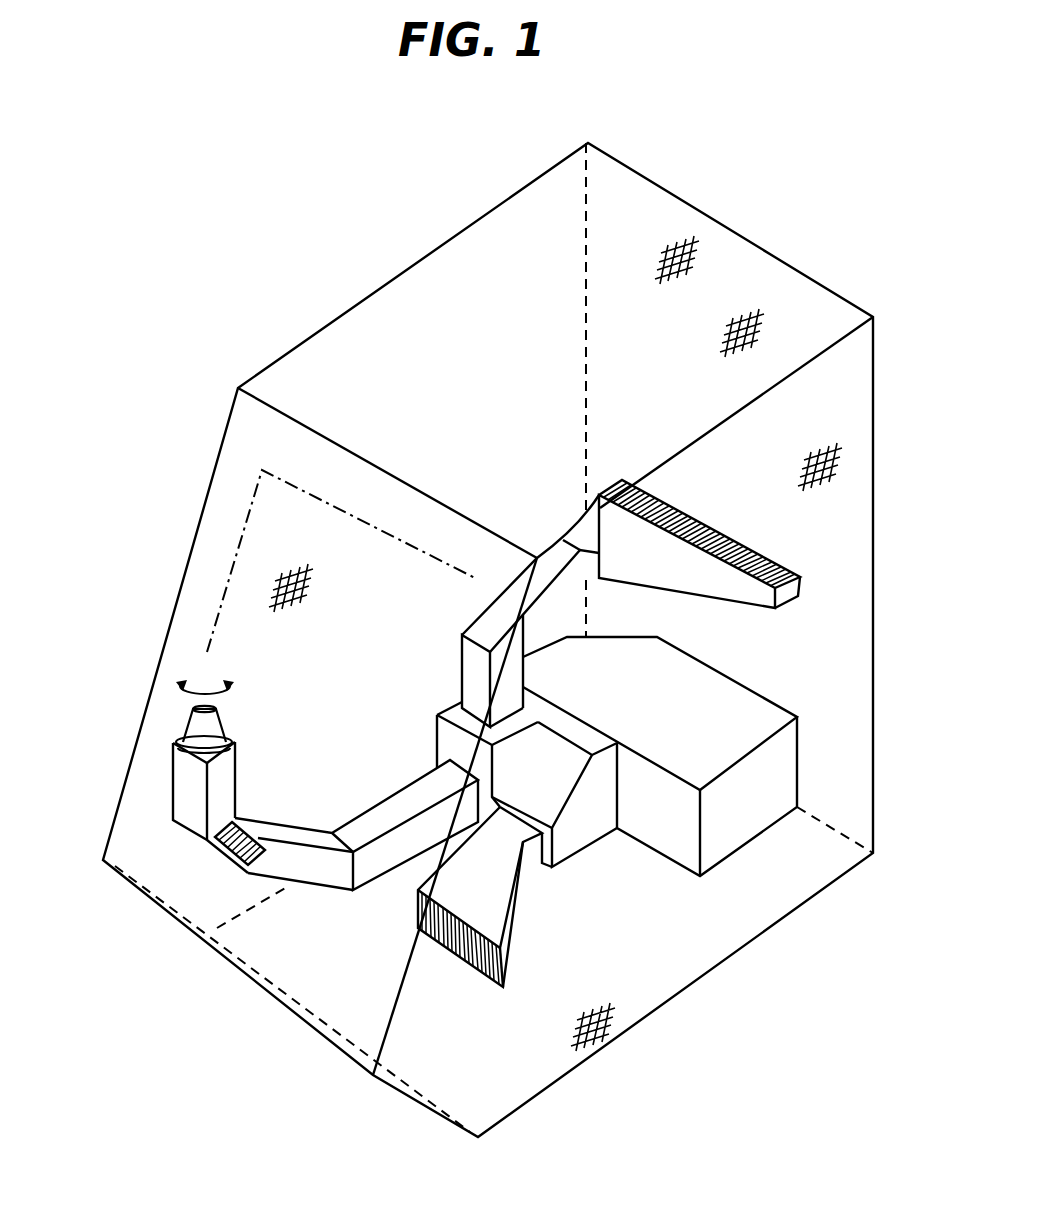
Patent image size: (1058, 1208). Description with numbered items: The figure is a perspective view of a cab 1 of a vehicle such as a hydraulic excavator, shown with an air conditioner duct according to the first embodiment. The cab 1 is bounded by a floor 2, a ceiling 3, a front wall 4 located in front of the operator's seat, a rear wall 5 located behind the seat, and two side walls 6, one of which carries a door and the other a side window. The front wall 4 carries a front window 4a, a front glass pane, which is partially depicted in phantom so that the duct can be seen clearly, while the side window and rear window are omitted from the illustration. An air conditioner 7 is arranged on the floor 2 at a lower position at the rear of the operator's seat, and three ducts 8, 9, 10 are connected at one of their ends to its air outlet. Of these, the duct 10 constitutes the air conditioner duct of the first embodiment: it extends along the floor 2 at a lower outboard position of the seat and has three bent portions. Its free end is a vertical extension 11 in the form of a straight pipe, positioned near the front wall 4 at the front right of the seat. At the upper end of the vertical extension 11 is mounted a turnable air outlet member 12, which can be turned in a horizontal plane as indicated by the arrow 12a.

The cab 1 is at (360, 291).
The floor 2 is at (598, 1040).
The ceiling 3 is at (700, 247).
The front wall 4 is at (287, 560).
The front window 4a is at (262, 485).
The rear wall 5 is at (760, 327).
The side walls 6 is at (842, 453).
The air conditioner 7 is at (780, 768).
The duct 8 is at (498, 893).
The duct 9 is at (563, 595).
The air conditioner duct 10 is at (335, 873).
The vertical extension 11 is at (183, 788).
The air outlet member 12 is at (177, 728).
The arrow 12a is at (172, 680).